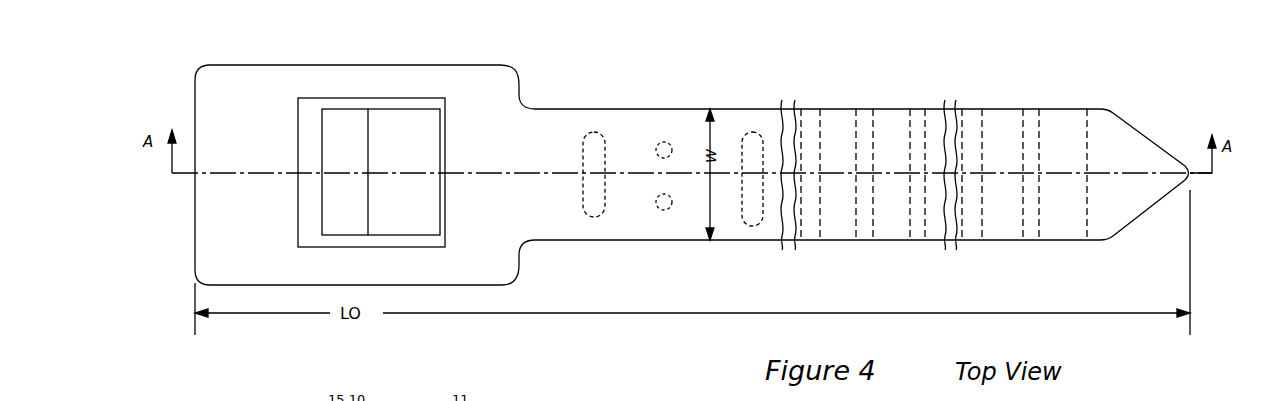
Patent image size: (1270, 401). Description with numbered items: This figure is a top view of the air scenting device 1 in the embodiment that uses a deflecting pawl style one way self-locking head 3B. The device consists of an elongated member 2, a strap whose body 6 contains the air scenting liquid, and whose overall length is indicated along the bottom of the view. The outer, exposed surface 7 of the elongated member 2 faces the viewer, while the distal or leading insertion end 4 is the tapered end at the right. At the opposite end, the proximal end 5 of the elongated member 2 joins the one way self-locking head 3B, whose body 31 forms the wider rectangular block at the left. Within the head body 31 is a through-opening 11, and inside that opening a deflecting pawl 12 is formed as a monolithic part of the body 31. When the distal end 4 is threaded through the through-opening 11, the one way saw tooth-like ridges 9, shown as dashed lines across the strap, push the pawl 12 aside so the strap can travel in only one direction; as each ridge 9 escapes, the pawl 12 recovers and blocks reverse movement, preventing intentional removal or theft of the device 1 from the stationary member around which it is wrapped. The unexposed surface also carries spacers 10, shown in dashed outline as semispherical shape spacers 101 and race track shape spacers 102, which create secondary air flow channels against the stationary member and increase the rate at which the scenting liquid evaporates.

The air scenting device 1 is at (990, 24).
The elongated member 2 is at (996, 117).
The one way self-locking head 3B is at (466, 78).
The distal end 4 is at (1151, 159).
The proximal end 5 is at (522, 240).
The body of elongated member 6 is at (885, 127).
The outer surface 7 is at (1058, 119).
The one way saw tooth-like ridges 9 is at (980, 223).
The spacers 10 is at (664, 204).
The through-opening 11 is at (386, 106).
The deflecting pawl 12 is at (328, 220).
The body of one way self-locking head 31 is at (252, 279).
The semispherical shape spacers 101 is at (664, 149).
The race track shape spacers 102 is at (593, 134).